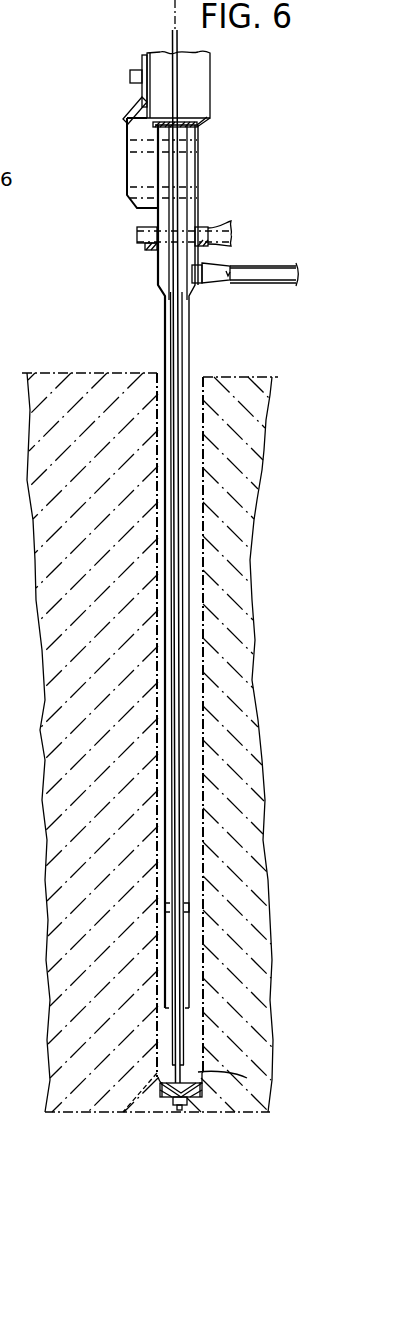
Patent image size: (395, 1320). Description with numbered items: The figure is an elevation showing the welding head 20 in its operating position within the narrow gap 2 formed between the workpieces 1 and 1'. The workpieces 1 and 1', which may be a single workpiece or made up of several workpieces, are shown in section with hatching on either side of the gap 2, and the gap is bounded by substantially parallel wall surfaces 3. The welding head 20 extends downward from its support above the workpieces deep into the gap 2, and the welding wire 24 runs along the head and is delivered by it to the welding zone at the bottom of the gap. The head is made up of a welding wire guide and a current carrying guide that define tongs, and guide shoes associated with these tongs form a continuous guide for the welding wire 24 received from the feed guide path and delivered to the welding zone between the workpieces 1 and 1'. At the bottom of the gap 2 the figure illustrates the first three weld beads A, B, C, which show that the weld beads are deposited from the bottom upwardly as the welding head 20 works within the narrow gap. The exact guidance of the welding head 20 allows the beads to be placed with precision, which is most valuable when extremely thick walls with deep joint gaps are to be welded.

The welding wire 24 is at (173, 72).
The welding head 20 is at (186, 327).
The wall surface 3 is at (155, 420).
The narrow gap 2 is at (197, 552).
The workpiece 1 is at (136, 742).
The workpiece 1' is at (243, 744).
The first weld bead A is at (180, 1107).
The second weld bead B is at (123, 1112).
The third weld bead C is at (247, 1078).